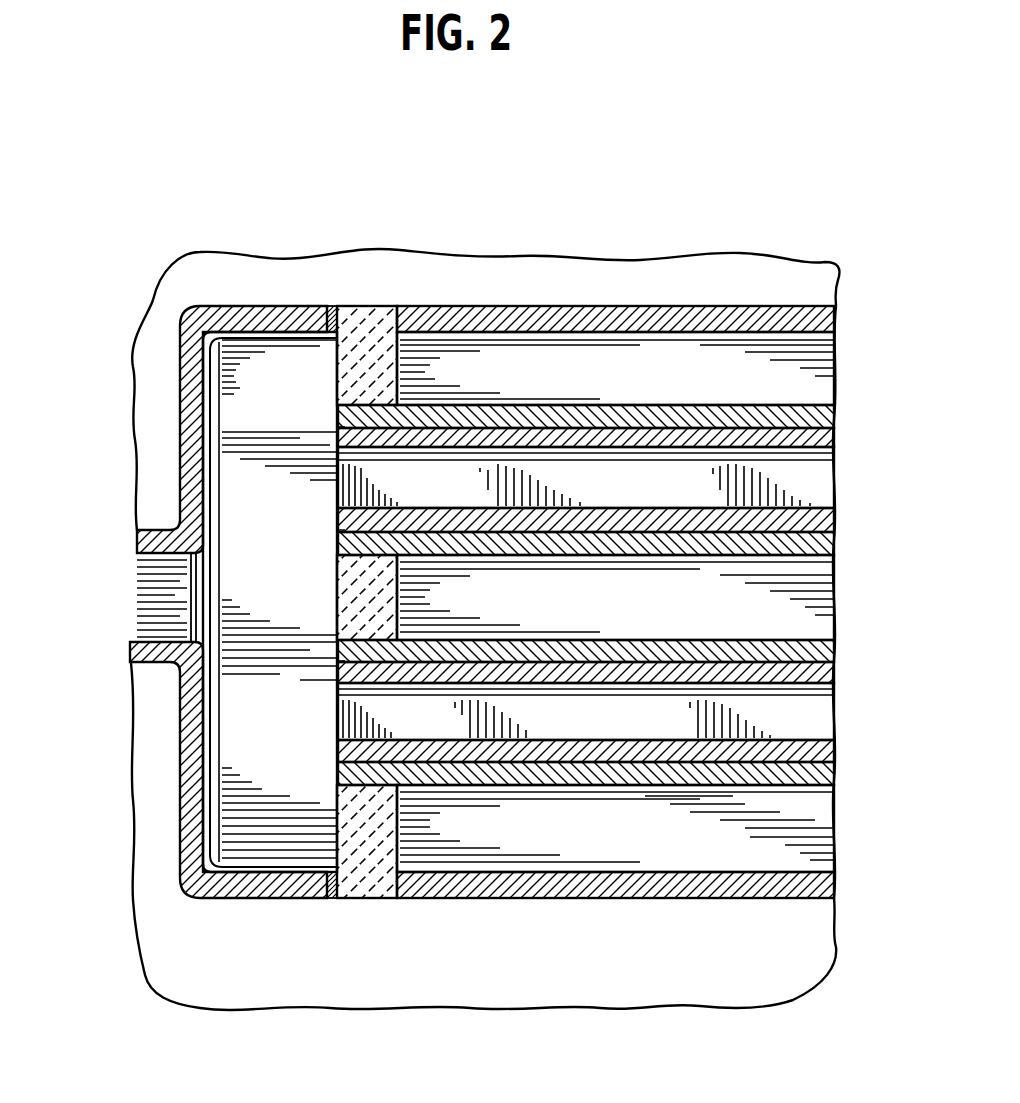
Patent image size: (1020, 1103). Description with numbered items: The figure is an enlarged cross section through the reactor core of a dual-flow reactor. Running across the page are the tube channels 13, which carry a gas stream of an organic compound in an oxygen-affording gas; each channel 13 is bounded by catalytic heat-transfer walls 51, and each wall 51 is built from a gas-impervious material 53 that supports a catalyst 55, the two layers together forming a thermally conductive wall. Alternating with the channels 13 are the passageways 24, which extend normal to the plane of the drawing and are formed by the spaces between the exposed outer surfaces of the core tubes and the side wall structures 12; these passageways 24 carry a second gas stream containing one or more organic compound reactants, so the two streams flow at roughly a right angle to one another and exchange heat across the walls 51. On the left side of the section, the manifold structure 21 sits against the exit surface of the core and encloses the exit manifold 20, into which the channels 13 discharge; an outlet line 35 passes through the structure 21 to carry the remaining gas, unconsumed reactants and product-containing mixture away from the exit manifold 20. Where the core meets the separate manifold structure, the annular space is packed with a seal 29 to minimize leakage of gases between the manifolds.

The outer side wall 12 is at (797, 900).
The tube channel 13 is at (586, 593).
The exit manifold 20 is at (270, 602).
The manifold structure 21 is at (182, 372).
The passageway 24 is at (615, 602).
The seal 29 is at (333, 898).
The outlet line 35 is at (140, 538).
The catalytic heat-transfer wall 51 is at (337, 530).
The gas-impervious material 53 is at (460, 404).
The catalyst 55 is at (817, 452).